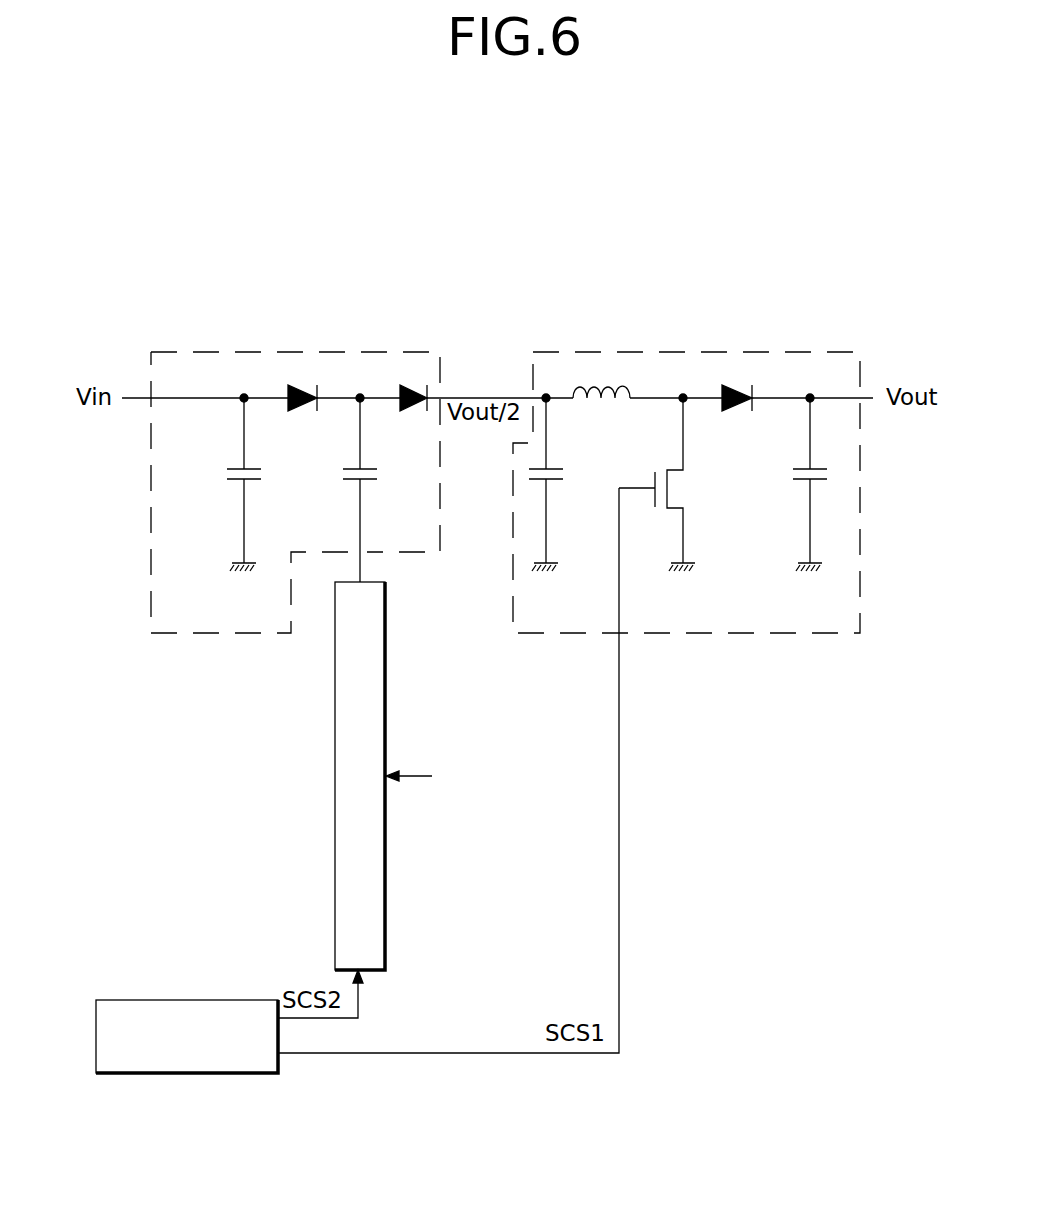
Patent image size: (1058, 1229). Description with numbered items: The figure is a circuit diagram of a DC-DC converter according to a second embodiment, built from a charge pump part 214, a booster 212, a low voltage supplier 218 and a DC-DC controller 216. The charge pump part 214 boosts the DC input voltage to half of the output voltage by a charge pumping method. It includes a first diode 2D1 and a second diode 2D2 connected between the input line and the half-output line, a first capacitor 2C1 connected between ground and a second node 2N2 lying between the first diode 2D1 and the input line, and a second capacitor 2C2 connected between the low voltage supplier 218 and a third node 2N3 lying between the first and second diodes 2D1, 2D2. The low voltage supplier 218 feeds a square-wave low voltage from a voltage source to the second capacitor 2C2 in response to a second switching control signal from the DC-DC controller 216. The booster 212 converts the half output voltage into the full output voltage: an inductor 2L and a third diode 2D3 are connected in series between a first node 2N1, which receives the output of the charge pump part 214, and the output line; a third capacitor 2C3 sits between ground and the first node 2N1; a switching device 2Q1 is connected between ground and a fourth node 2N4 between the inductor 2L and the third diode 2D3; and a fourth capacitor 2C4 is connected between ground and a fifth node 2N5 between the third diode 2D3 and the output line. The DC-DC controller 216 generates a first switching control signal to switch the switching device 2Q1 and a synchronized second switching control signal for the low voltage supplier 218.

The first node 2N1 is at (546, 398).
The second node 2N2 is at (244, 398).
The third node 2N3 is at (360, 398).
The fourth node 2N4 is at (683, 398).
The fifth node 2N5 is at (810, 398).
The booster 212 is at (757, 352).
The charge pump part 214 is at (440, 352).
The DC-DC controller 216 is at (216, 1073).
The low voltage supplier 218 is at (385, 942).
The first diode 2D1 is at (305, 382).
The second diode 2D2 is at (416, 382).
The third diode 2D3 is at (736, 382).
The inductor 2L is at (601, 376).
The first capacitor 2C1 is at (267, 500).
The second capacitor 2C2 is at (388, 490).
The third capacitor 2C3 is at (569, 500).
The fourth capacitor 2C4 is at (787, 500).
The switching device 2Q1 is at (670, 500).